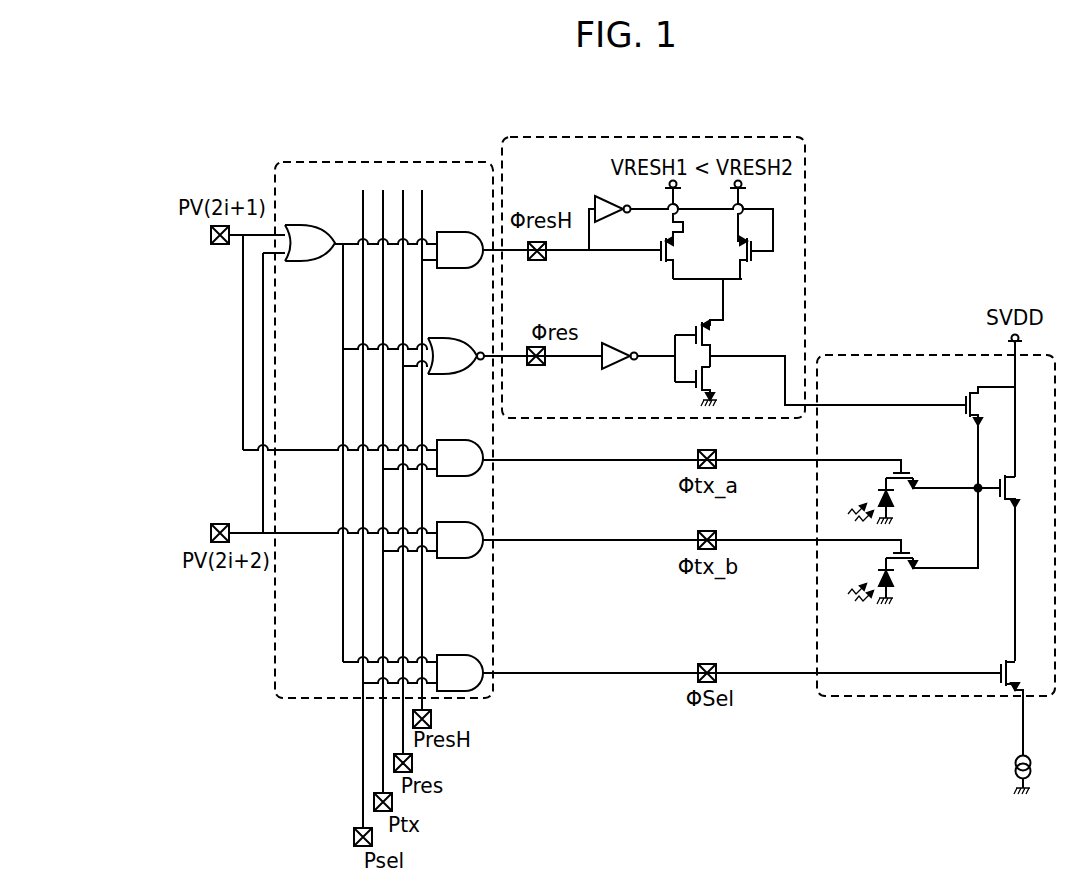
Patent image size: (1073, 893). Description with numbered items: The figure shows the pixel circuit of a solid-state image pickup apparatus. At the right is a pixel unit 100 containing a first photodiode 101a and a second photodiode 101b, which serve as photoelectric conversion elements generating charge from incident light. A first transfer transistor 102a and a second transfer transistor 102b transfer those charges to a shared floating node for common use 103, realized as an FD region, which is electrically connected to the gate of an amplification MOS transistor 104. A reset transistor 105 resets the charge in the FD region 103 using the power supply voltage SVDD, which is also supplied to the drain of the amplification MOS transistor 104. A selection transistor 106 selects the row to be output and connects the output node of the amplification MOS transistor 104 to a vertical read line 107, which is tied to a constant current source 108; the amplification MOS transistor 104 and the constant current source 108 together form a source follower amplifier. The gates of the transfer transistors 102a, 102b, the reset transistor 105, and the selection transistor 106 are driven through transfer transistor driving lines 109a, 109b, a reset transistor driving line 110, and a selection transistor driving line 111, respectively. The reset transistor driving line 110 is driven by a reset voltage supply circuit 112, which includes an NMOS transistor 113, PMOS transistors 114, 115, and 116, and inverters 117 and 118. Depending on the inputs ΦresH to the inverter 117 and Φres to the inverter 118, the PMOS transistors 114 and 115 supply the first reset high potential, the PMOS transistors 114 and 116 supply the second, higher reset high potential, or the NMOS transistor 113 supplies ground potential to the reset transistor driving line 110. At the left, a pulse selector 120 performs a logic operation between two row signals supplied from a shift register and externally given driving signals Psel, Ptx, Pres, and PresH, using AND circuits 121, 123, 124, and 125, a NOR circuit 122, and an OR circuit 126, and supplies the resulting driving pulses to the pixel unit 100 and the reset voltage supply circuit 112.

The pixel unit 100 is at (894, 355).
The first photodiode 101a is at (878, 495).
The second photodiode 101b is at (878, 575).
The first transfer transistor 102a is at (902, 489).
The second transfer transistor 102b is at (902, 569).
The floating node for common use 103 is at (975, 485).
The amplification MOS transistor 104 is at (1001, 478).
The reset transistor 105 is at (965, 395).
The selection transistor 106 is at (998, 663).
The vertical read line 107 is at (1021, 729).
The constant current source 108 is at (1014, 767).
The transfer transistor driving line 109a is at (800, 455).
The transfer transistor driving line 109b is at (800, 536).
The reset transistor driving line 110 is at (802, 398).
The selection transistor driving line 111 is at (800, 669).
The reset voltage supply circuit 112 is at (645, 138).
The NMOS transistor 113 is at (714, 381).
The PMOS transistor 114 is at (714, 338).
The PMOS transistor 115 is at (672, 279).
The PMOS transistor 116 is at (754, 279).
The inverter 117 is at (590, 202).
The inverter 118 is at (604, 369).
The pulse selector 120 is at (381, 162).
The AND circuit 121 is at (465, 233).
The NOR circuit 122 is at (452, 339).
The AND circuit 123 is at (465, 441).
The AND circuit 124 is at (465, 523).
The AND circuit 125 is at (465, 656).
The OR circuit 126 is at (313, 228).